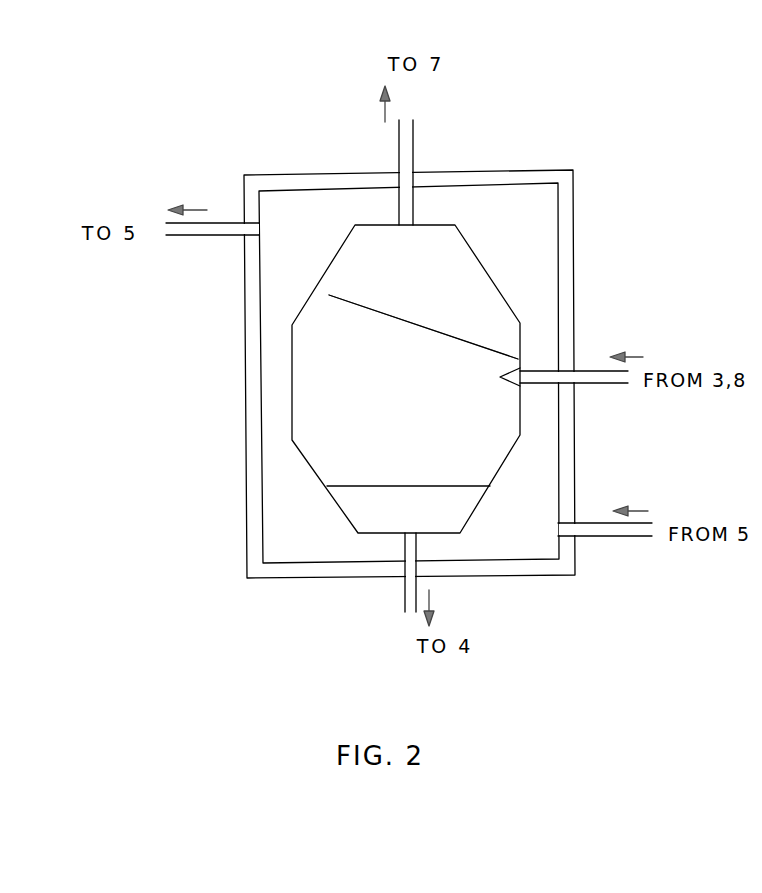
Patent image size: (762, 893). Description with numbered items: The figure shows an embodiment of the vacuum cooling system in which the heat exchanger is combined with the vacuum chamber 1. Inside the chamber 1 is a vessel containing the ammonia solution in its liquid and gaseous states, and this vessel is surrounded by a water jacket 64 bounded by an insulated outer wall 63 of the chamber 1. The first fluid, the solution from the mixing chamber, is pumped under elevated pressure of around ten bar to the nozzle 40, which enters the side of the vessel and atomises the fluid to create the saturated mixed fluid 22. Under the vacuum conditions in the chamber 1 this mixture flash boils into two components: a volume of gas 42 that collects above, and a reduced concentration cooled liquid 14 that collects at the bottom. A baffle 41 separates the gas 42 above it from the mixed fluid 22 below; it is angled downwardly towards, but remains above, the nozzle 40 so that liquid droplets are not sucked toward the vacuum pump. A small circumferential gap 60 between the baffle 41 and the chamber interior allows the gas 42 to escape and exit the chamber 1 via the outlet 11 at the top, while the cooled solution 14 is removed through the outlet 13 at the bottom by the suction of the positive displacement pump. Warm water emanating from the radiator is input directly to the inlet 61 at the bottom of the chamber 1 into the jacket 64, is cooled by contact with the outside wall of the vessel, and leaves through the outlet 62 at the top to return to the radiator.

The vacuum chamber 1 is at (320, 175).
The outlet 11 is at (405, 173).
The outlet 13 is at (400, 580).
The cooled liquid 14 is at (408, 505).
The mixed fluid 22 is at (406, 379).
The nozzle 40 is at (512, 388).
The baffle 41 is at (391, 317).
The gas 42 is at (449, 293).
The circumferential gap 60 is at (328, 292).
The inlet 61 is at (576, 538).
The outlet 62 is at (244, 222).
The insulated outer wall 63 is at (253, 415).
The water jacket 64 is at (517, 250).